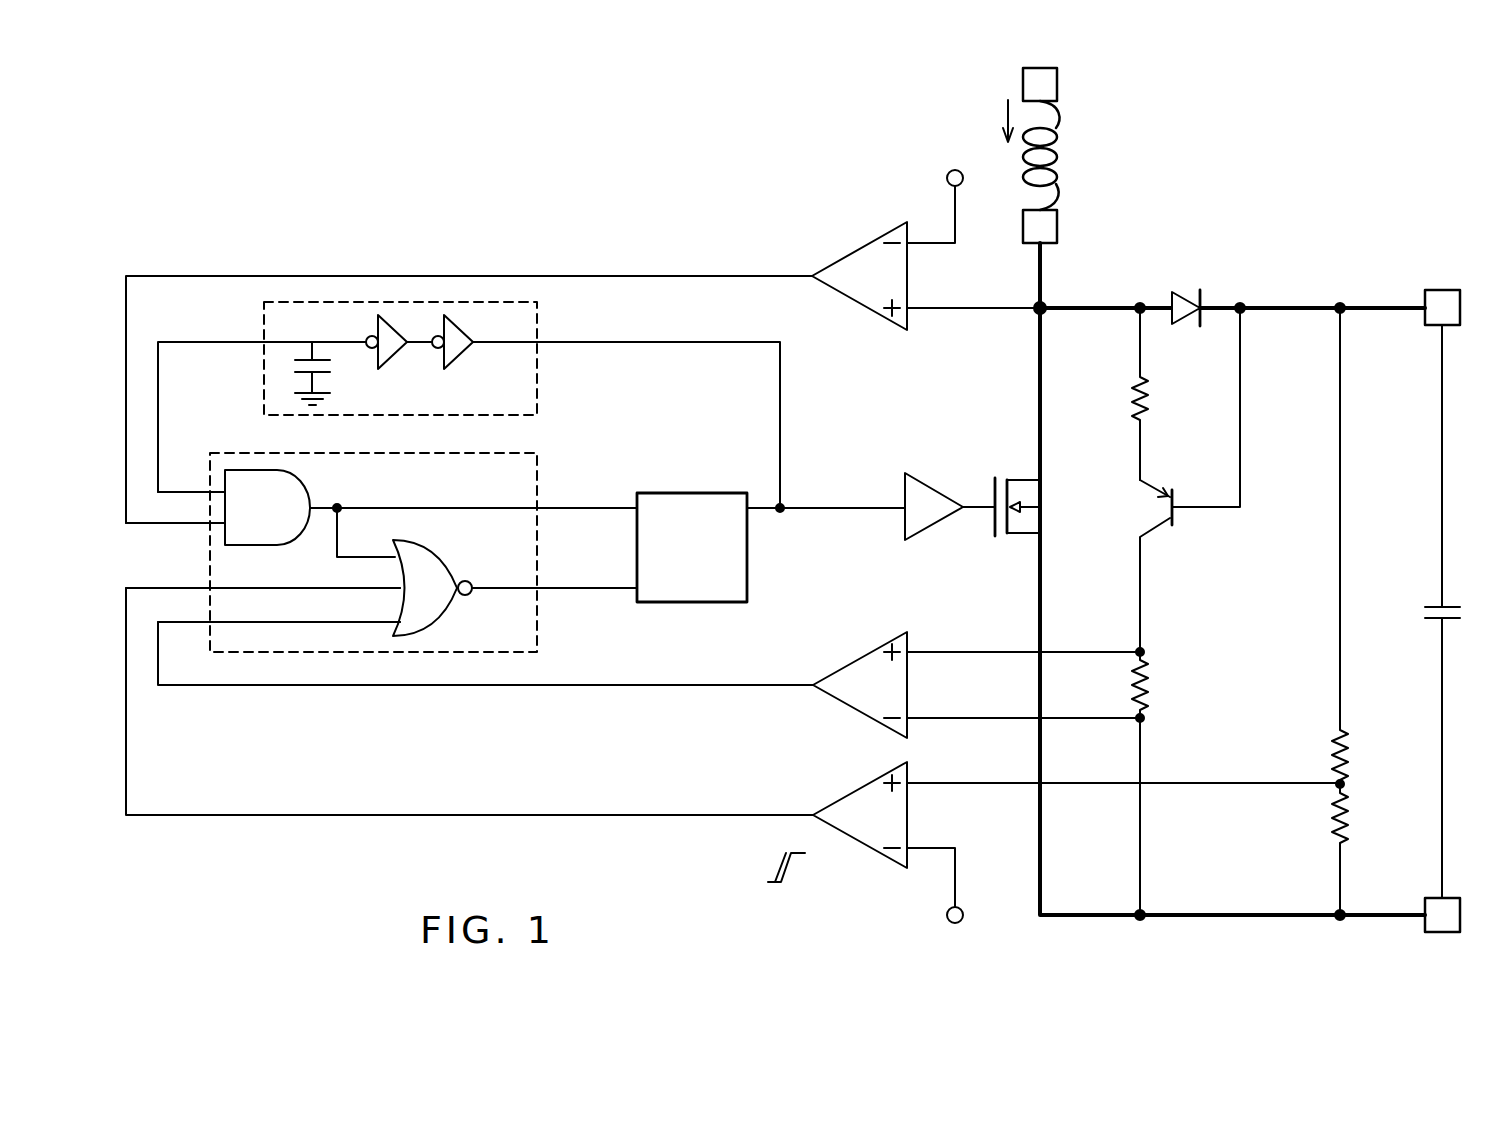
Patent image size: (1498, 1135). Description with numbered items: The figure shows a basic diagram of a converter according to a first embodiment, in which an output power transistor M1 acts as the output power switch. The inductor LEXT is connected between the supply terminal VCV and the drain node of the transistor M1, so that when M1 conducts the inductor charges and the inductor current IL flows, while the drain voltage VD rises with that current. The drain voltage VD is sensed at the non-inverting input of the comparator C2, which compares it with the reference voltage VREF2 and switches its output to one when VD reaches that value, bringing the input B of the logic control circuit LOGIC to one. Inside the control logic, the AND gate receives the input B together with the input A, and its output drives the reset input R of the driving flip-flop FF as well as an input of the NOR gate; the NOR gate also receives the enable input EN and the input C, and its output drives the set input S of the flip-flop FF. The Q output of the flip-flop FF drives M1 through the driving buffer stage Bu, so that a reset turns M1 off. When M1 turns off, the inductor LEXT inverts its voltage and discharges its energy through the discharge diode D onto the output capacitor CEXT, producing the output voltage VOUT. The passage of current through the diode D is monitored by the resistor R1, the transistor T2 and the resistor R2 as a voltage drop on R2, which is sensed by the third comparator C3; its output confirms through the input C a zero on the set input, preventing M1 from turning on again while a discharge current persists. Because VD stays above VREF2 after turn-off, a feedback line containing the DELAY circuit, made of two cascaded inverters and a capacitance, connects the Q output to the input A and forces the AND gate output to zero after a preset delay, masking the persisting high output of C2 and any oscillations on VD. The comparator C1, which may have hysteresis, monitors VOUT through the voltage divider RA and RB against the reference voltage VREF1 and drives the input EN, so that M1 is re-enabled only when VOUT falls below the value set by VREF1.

The delay circuit DELAY is at (537, 318).
The logic control circuit LOGIC is at (537, 482).
The AND gate AND is at (269, 525).
The NOR gate NOR is at (454, 590).
The input A is at (191, 480).
The input B is at (175, 512).
The input EN is at (263, 575).
The input C is at (279, 610).
The driving flip-flop FF is at (692, 547).
The driving buffer stage Bu is at (950, 506).
The output power transistor M1 is at (1045, 507).
The comparator C2 is at (859, 276).
The reference voltage VREF2 is at (901, 203).
The third comparator C3 is at (976, 685).
The comparator C1 is at (1054, 822).
The reference voltage VREF1 is at (901, 890).
The supply voltage terminal VCV is at (1077, 87).
The inductor LEXT is at (1083, 172).
The inductor current IL is at (988, 117).
The drain voltage VD is at (1043, 305).
The discharge diode D is at (1195, 290).
The output voltage VOUT is at (1448, 289).
The resistor R1 is at (1165, 394).
The transistor T2 is at (1190, 480).
The resistor R2 is at (1165, 781).
The voltage divider resistor RA is at (1366, 548).
The voltage divider resistor RB is at (1366, 849).
The output capacitor CEXT is at (1406, 628).